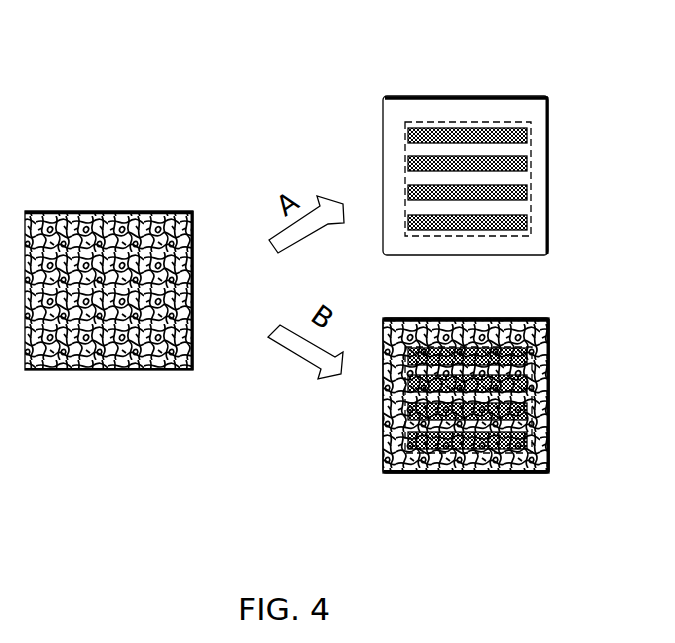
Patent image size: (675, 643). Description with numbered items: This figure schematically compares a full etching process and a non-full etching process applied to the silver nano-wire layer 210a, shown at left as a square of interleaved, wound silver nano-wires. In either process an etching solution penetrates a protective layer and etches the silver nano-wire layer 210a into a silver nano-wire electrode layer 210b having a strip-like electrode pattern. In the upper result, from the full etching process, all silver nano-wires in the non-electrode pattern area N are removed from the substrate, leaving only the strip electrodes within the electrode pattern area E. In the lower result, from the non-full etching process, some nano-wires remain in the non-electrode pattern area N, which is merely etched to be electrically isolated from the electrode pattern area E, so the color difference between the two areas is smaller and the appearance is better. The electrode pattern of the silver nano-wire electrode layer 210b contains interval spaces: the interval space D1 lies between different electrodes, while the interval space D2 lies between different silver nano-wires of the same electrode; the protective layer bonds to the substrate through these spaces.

The silver nano-wire layer 210a is at (109, 323).
The silver nano-wire electrode layer 210b is at (466, 426).
The non-electrode pattern area N is at (536, 114).
The electrode pattern area E is at (530, 162).
The interval space between different electrodes D1 is at (513, 208).
The interval space between silver nano-wires of the same electrode D2 is at (452, 125).